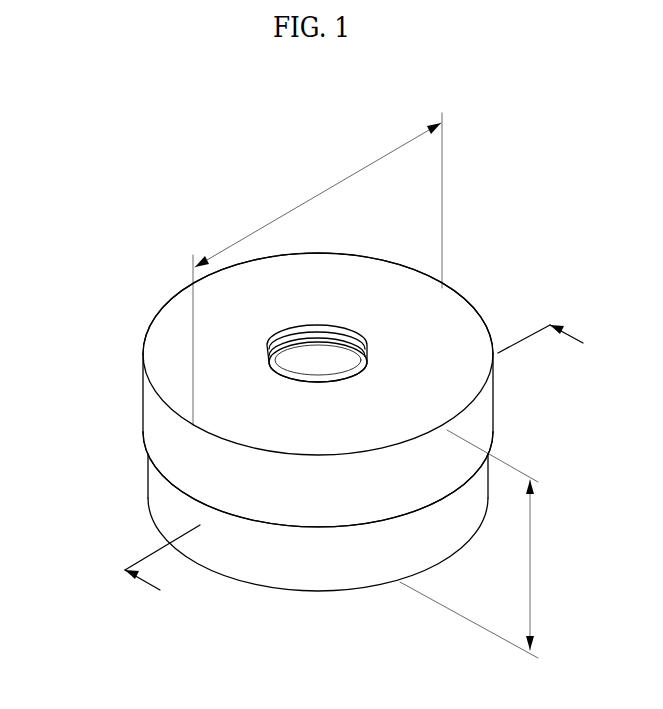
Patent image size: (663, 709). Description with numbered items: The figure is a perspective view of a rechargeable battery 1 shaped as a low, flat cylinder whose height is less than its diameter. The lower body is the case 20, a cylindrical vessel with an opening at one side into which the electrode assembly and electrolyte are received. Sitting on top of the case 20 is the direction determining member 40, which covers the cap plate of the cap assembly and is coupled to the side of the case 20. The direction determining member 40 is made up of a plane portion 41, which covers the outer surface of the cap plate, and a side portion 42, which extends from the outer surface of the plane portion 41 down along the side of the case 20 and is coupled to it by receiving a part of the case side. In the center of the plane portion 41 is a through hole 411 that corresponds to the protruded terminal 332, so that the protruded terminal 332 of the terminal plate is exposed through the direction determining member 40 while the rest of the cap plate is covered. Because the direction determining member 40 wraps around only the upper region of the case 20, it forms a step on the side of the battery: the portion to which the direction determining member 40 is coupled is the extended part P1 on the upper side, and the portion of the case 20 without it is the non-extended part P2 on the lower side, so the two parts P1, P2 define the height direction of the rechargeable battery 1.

The rechargeable battery 1 is at (329, 121).
The case 20 is at (308, 582).
The direction determining member 40 is at (545, 375).
The plane portion 41 is at (479, 375).
The side portion 42 is at (481, 412).
The through hole 411 is at (327, 330).
The protruded terminal 332 is at (333, 353).
The extended part P1 is at (130, 397).
The non-extended part P2 is at (135, 477).